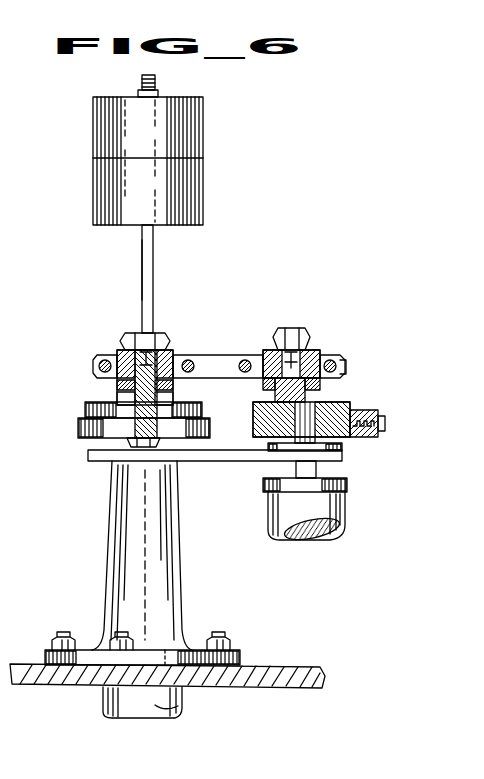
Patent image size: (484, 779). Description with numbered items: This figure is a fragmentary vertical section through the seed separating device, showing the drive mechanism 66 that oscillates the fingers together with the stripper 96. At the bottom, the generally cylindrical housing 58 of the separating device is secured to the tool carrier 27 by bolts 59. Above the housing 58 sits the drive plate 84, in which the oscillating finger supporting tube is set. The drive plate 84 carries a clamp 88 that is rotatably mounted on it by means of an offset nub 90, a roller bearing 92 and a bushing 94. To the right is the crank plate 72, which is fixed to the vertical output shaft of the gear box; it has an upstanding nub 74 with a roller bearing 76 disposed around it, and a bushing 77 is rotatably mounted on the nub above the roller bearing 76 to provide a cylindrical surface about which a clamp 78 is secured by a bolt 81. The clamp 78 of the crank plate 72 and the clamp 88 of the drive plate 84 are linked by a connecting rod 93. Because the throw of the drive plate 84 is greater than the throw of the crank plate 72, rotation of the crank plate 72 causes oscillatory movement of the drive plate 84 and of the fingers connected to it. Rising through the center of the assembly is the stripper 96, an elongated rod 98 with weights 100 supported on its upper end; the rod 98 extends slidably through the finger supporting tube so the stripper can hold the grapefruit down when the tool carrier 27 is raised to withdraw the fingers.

The weights 100 is at (204, 148).
The elongated rod 98 is at (140, 266).
The stripper 96 is at (158, 258).
The offset nub 90 is at (138, 354).
The bushing 94 is at (172, 355).
The connecting rod 93 is at (207, 363).
The roller bearing 92 is at (118, 388).
The clamp 88 is at (100, 360).
The drive plate 84 is at (86, 410).
The bushing 77 is at (268, 354).
The upstanding nub 74 is at (306, 352).
The clamp 78 is at (336, 356).
The bolt 81 is at (347, 366).
The roller bearing 76 is at (272, 393).
The drive mechanism 66 is at (386, 387).
The crank plate 72 is at (352, 440).
The bolts 59 is at (120, 636).
The tool carrier 27 is at (290, 667).
The housing 58 is at (183, 700).